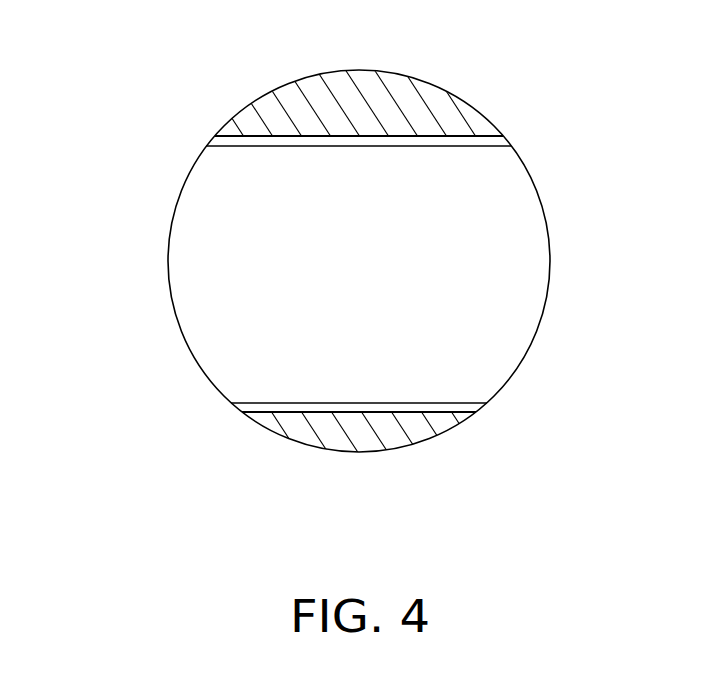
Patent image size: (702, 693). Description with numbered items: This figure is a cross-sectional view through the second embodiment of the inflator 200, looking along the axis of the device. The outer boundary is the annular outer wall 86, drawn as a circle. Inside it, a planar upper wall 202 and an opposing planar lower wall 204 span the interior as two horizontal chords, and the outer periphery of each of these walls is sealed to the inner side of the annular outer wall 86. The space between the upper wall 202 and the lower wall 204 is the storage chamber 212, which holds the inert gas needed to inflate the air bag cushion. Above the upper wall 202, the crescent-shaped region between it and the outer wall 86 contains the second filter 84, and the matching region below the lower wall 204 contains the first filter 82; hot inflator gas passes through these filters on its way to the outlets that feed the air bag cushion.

The inflator 200 is at (249, 73).
The annular outer wall 86 is at (418, 78).
The second filter 84 is at (442, 115).
The first filter 82 is at (401, 438).
The planar upper wall 202 is at (232, 147).
The planar lower wall 204 is at (253, 404).
The storage chamber 212 is at (382, 203).